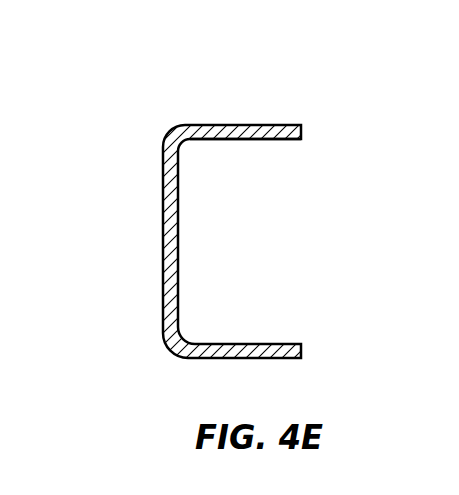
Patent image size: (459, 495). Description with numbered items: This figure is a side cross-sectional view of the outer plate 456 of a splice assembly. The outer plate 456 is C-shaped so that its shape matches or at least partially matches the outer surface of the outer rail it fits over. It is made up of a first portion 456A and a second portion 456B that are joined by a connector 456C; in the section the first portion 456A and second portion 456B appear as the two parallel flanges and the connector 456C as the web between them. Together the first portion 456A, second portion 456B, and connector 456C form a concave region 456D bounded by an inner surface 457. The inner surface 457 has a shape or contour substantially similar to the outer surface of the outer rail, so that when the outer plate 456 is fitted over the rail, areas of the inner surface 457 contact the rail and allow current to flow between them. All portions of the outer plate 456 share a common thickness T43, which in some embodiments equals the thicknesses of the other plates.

The outer plate 456 is at (229, 229).
The first portion 456A is at (259, 125).
The second portion 456B is at (237, 358).
The connector 456C is at (163, 174).
The concave region 456D is at (310, 284).
The inner surface 457 is at (269, 141).
The thickness T43 is at (222, 222).